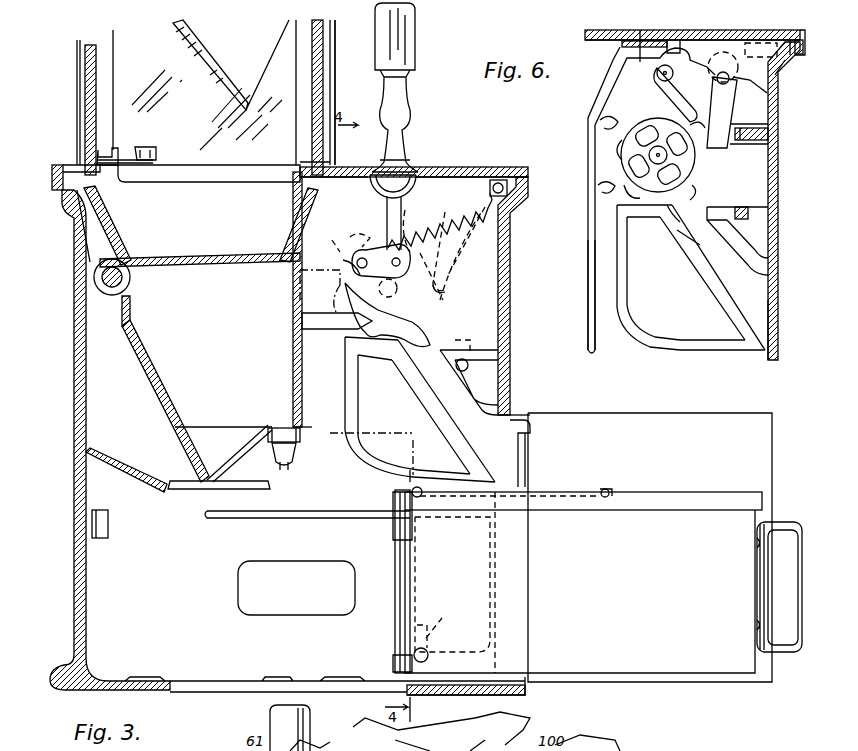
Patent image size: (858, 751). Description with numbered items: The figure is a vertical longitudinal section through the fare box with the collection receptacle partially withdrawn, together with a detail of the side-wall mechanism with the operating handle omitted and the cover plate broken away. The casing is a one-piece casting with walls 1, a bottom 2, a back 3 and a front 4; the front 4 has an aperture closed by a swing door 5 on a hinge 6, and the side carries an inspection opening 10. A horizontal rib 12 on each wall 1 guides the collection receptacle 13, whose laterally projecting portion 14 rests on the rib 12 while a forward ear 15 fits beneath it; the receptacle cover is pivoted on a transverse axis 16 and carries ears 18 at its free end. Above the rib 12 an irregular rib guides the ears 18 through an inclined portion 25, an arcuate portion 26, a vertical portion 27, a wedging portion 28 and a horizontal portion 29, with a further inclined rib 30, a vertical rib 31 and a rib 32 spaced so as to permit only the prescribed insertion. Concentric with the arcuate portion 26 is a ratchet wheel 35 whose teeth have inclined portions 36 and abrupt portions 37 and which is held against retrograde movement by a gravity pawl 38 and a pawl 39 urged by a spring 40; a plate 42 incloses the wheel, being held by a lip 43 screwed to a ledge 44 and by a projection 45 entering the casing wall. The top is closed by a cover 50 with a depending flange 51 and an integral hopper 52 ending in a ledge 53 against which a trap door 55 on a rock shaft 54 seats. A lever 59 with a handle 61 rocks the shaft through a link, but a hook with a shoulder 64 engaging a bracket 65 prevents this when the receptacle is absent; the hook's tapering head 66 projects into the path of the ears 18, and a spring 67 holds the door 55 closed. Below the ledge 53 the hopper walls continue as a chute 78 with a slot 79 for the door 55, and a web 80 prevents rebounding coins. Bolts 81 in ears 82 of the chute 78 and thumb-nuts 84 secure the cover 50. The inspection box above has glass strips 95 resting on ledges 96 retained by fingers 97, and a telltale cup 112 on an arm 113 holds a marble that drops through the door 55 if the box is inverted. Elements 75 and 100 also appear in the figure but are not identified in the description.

In FIG. 3, the walls 1 is at (122, 537).
In FIG. 3, the bottom 2 is at (108, 680).
In FIG. 3, the back 3 is at (74, 380).
In FIG. 3, the front 4 is at (510, 298).
In FIG. 6, the front 4 is at (780, 180).
In FIG. 3, the swing door 5 is at (665, 547).
In FIG. 6, the swing door 5 is at (778, 288).
In FIG. 3, the hinge 6 is at (518, 420).
In FIG. 3, the inspection opening 10 is at (296, 588).
In FIG. 3, the horizontal rib 12 is at (286, 520).
In FIG. 3, the collection receptacle 13 is at (580, 582).
In FIG. 3, the laterally projecting portion 14 is at (558, 510).
In FIG. 3, the laterally projecting ear 15 is at (412, 536).
In FIG. 3, the transverse axis 16 is at (610, 490).
In FIG. 3, the laterally projecting ear 18 is at (416, 478).
In FIG. 3, the inclined portion 25 is at (428, 415).
In FIG. 6, the inclined portion 25 is at (706, 282).
In FIG. 3, the arcuate portion 26 is at (362, 366).
In FIG. 6, the arcuate portion 26 is at (634, 224).
In FIG. 3, the vertical portion 27 is at (352, 420).
In FIG. 6, the vertical portion 27 is at (620, 280).
In FIG. 3, the wedging portion 28 is at (370, 470).
In FIG. 6, the wedging portion 28 is at (645, 330).
In FIG. 3, the horizontal portion 29 is at (455, 480).
In FIG. 6, the horizontal portion 29 is at (702, 344).
In FIG. 3, the rib 30 is at (446, 384).
In FIG. 6, the rib 30 is at (726, 246).
In FIG. 6, the vertical rib 31 is at (588, 256).
In FIG. 3, the rib 32 is at (232, 488).
In FIG. 6, the ratchet wheel 35 is at (632, 118).
In FIG. 6, the inclined portions 36 is at (600, 124).
In FIG. 6, the abrupt portions 37 is at (685, 225).
In FIG. 6, the pawl 38 is at (690, 88).
In FIG. 6, the pawl 39 is at (727, 120).
In FIG. 6, the spring 40 is at (738, 148).
In FIG. 3, the plate 42 is at (450, 296).
In FIG. 6, the plate 42 is at (790, 78).
In FIG. 6, the laterally projecting lip 43 is at (660, 40).
In FIG. 6, the horizontal ledge 44 is at (636, 30).
In FIG. 3, the projection 45 is at (470, 370).
In FIG. 3, the cover 50 is at (455, 170).
In FIG. 6, the cover 50 is at (732, 30).
In FIG. 3, the marginal flange 51 is at (52, 172).
In FIG. 6, the marginal flange 51 is at (804, 50).
In FIG. 3, the hopper 52 is at (122, 232).
In FIG. 3, the ledge 53 is at (288, 270).
In FIG. 3, the rock shaft 54 is at (104, 294).
In FIG. 3, the trap door 55 is at (220, 254).
In FIG. 3, the lever 59 is at (400, 238).
In FIG. 3, the handle 61 is at (410, 56).
In FIG. 3, the shoulder 64 is at (300, 320).
In FIG. 3, the bracket 65 is at (300, 355).
In FIG. 3, the tapering head 66 is at (385, 292).
In FIG. 3, the spring 67 is at (452, 234).
In FIG. 3, the pin 75 is at (439, 635).
In FIG. 3, the chute 78 is at (165, 398).
In FIG. 3, the slot 79 is at (130, 304).
In FIG. 3, the web 80 is at (122, 462).
In FIG. 3, the bolts 81 is at (280, 428).
In FIG. 3, the ears 82 is at (256, 440).
In FIG. 3, the thumb-nuts 84 is at (282, 466).
In FIG. 3, the plate glass strips 95 is at (323, 70).
In FIG. 3, the ledges 96 is at (296, 198).
In FIG. 3, the fingers 97 is at (290, 168).
In FIG. 3, the scraper 100 is at (176, 45).
In FIG. 3, the cup 112 is at (164, 144).
In FIG. 3, the arm 113 is at (120, 152).